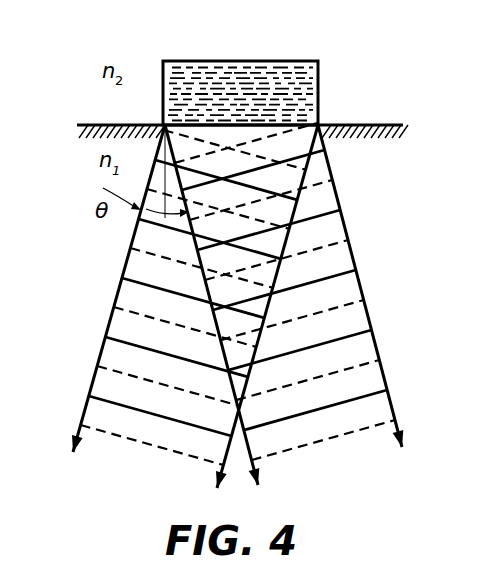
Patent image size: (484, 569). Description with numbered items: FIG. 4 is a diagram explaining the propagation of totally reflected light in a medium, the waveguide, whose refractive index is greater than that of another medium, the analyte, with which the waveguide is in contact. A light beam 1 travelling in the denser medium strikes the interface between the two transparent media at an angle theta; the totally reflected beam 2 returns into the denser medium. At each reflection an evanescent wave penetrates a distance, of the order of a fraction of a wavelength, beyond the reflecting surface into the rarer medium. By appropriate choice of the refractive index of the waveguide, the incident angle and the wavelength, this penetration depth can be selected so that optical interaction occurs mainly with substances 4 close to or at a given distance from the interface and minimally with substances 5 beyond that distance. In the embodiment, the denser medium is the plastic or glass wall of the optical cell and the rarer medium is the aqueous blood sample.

The light beam 1 is at (111, 316).
The reflected beam 2 is at (368, 311).
The substances close to or at a given distance from the interface 4 is at (189, 78).
The substances beyond said distance 5 is at (272, 35).